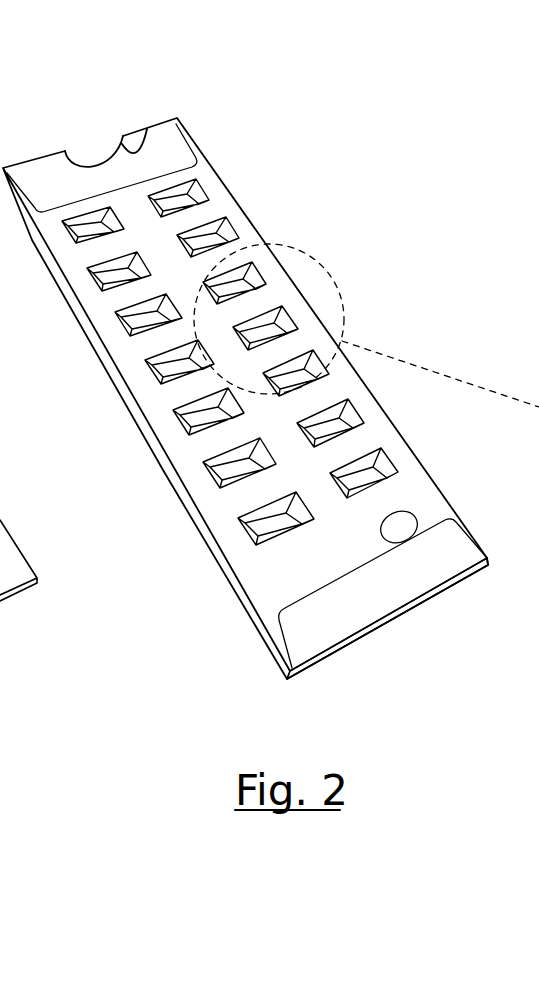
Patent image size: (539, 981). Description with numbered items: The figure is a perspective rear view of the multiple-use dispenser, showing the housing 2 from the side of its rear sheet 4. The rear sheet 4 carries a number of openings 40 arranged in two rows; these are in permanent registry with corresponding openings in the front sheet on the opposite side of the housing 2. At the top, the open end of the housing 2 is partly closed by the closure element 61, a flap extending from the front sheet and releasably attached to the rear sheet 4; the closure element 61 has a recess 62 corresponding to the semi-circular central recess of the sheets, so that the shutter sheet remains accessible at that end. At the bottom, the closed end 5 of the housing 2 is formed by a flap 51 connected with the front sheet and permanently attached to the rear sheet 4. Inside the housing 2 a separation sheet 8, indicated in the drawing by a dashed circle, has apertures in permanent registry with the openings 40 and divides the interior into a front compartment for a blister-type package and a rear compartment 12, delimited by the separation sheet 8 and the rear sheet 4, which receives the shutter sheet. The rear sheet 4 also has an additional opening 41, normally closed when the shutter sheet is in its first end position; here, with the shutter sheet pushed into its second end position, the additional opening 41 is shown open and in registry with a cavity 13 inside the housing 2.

The housing 2 is at (115, 372).
The rear sheet 4 is at (263, 572).
The closed end 5 is at (408, 604).
The separation sheet 8 is at (297, 361).
The rear compartment 12 is at (138, 304).
The cavity 13 is at (402, 529).
The openings 40 is at (233, 224).
The additional opening 41 is at (450, 484).
The flap 51 is at (355, 607).
The closure element 61 is at (37, 177).
The recess 62 is at (147, 132).